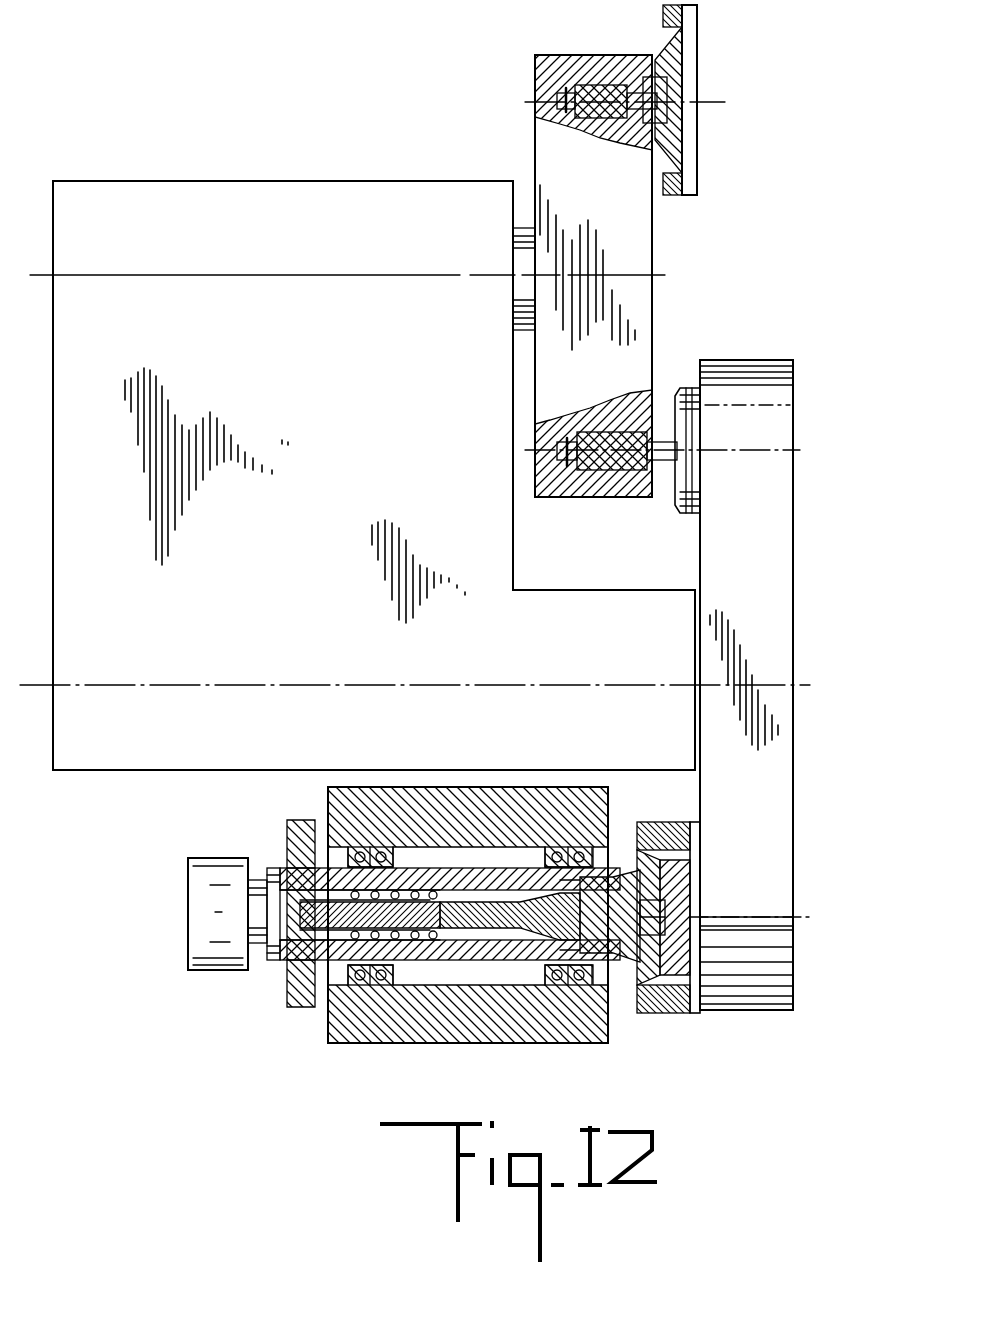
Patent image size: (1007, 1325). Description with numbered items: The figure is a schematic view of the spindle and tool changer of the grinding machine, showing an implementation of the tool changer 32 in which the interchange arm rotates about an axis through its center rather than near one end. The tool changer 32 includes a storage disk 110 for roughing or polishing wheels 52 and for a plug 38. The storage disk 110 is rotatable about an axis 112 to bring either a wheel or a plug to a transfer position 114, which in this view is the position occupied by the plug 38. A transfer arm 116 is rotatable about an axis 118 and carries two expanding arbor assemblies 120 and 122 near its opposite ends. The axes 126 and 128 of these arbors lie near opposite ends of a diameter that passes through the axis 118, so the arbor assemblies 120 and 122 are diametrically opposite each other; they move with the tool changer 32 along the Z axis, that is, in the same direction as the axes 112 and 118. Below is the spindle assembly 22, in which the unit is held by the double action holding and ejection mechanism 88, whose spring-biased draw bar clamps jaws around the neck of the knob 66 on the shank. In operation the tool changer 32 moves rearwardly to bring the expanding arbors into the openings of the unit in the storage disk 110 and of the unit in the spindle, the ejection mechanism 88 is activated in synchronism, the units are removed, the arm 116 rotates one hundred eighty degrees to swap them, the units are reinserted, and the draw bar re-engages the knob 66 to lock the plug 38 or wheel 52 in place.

The spindle assembly 22 is at (350, 1055).
The tool changer 32 is at (364, 146).
The plug 38 is at (535, 442).
The roughing or polishing wheel 52 is at (583, 77).
The knob 66 is at (535, 916).
The double action holding and ejection mechanism 88 is at (455, 920).
The storage disk 110 is at (535, 72).
The axis 112 is at (376, 276).
The transfer position 114 is at (670, 344).
The transfer arm 116 is at (795, 625).
The axis 118 is at (323, 680).
The expanding arbor assembly 120 is at (700, 455).
The expanding arbor assembly 122 is at (700, 895).
The axis 126 is at (789, 445).
The axis 128 is at (790, 915).